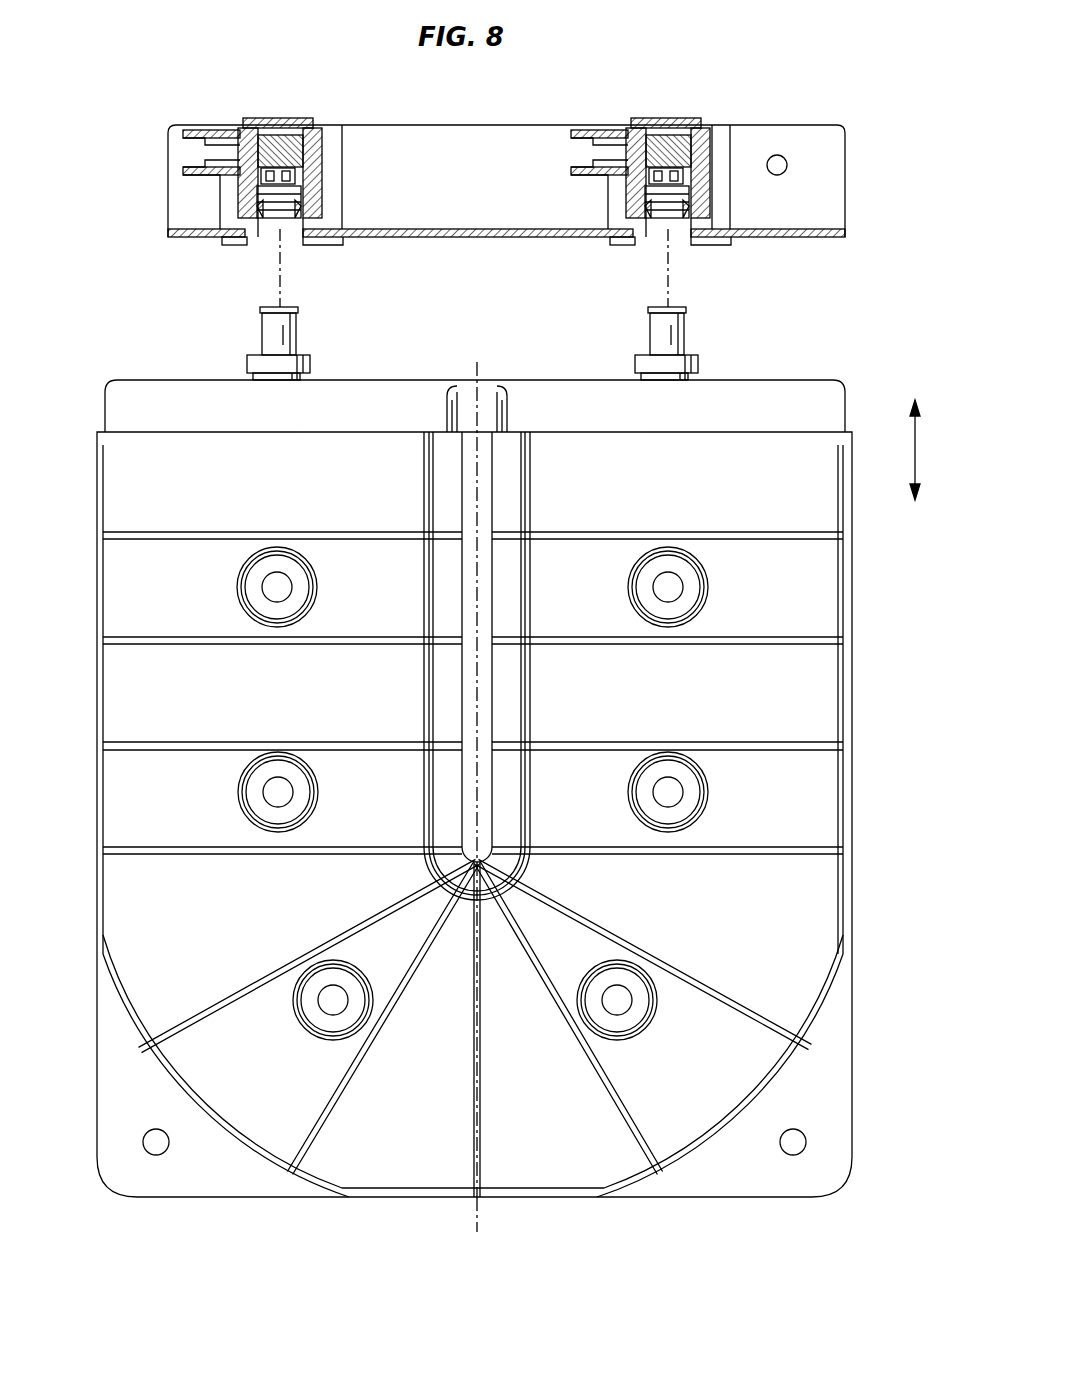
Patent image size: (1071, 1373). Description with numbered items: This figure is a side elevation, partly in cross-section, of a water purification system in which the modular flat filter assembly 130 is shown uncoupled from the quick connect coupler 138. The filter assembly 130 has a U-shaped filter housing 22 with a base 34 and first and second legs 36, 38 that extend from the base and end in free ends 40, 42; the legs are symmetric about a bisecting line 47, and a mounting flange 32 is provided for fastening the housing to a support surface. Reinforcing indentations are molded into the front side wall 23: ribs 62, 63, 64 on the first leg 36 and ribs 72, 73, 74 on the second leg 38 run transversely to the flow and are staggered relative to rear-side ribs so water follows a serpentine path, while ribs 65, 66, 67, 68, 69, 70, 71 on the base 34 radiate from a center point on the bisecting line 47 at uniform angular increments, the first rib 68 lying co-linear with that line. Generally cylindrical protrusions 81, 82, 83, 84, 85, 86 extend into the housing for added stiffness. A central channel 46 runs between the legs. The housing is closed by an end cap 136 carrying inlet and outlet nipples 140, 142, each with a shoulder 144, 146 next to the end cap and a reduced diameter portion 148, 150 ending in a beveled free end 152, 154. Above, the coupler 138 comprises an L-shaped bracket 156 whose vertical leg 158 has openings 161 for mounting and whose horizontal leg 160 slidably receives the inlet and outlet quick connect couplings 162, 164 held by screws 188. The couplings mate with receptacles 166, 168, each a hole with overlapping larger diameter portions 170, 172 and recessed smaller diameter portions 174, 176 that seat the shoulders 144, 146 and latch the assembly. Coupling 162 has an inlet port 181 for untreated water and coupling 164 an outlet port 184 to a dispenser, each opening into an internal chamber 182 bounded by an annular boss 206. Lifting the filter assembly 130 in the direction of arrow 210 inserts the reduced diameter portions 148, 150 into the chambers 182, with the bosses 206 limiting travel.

The filter housing 22 is at (852, 700).
The front side wall 23 is at (845, 795).
The mounting flange 32 is at (830, 1090).
The base 34 is at (849, 918).
The first leg 36 is at (100, 563).
The second leg 38 is at (843, 585).
The free end 40 is at (97, 432).
The free end 42 is at (852, 438).
The central channel 46 is at (475, 850).
The bisecting line 47 is at (479, 1222).
The rib 62 is at (200, 530).
The rib 63 is at (183, 637).
The rib 64 is at (185, 742).
The rib 65 is at (183, 846).
The rib 66 is at (250, 975).
The rib 67 is at (312, 1120).
The first rib 68 is at (484, 1125).
The rib 69 is at (630, 1110).
The rib 70 is at (712, 985).
The rib 71 is at (845, 852).
The rib 72 is at (843, 748).
The rib 73 is at (845, 642).
The rib 74 is at (845, 538).
The cylindrical protrusion 81 is at (320, 592).
The cylindrical protrusion 82 is at (320, 788).
The cylindrical protrusion 83 is at (310, 1030).
The cylindrical protrusion 84 is at (642, 1026).
The cylindrical protrusion 85 is at (710, 790).
The cylindrical protrusion 86 is at (708, 587).
The modular flat filter assembly 130 is at (482, 362).
The end cap 136 is at (840, 413).
The quick connect coupler 138 is at (443, 112).
The nipple 140 is at (299, 337).
The nipple 142 is at (676, 333).
The shoulder 144 is at (312, 368).
The shoulder 146 is at (700, 365).
The reduced diameter portion 148 is at (298, 341).
The reduced diameter portion 150 is at (686, 341).
The beveled free end 152 is at (300, 310).
The beveled free end 154 is at (688, 313).
The L-shaped bracket 156 is at (487, 125).
The vertical leg 158 is at (835, 167).
The horizontal leg 160 is at (845, 237).
The opening 161 is at (782, 156).
The inlet quick connect coupling 162 is at (308, 128).
The outlet quick connect coupling 164 is at (689, 128).
The receptacle 166 is at (286, 240).
The receptacle 168 is at (660, 242).
The larger diameter portion 170 is at (245, 228).
The larger diameter portion 172 is at (650, 228).
The smaller diameter portion 174 is at (320, 246).
The smaller diameter portion 176 is at (703, 246).
The inlet port 181 is at (215, 130).
The internal chamber 182 is at (300, 148).
The outlet port 184 is at (603, 130).
The screw 188 is at (223, 243).
The annular boss 206 is at (267, 223).
The arrow 210 is at (920, 462).